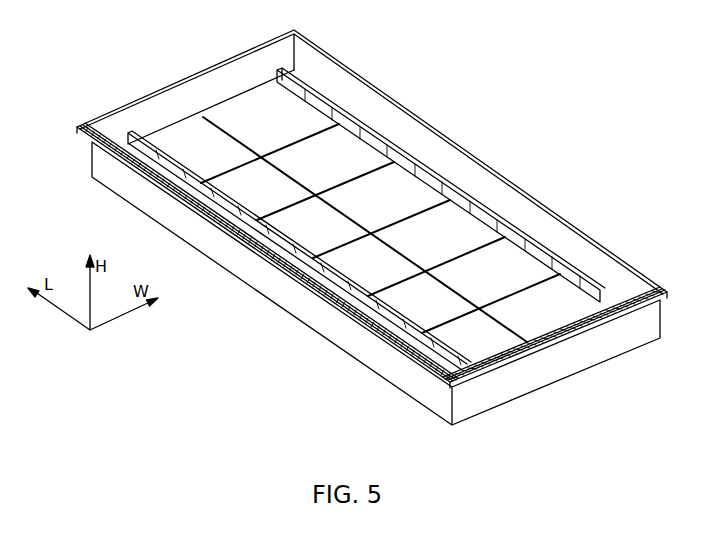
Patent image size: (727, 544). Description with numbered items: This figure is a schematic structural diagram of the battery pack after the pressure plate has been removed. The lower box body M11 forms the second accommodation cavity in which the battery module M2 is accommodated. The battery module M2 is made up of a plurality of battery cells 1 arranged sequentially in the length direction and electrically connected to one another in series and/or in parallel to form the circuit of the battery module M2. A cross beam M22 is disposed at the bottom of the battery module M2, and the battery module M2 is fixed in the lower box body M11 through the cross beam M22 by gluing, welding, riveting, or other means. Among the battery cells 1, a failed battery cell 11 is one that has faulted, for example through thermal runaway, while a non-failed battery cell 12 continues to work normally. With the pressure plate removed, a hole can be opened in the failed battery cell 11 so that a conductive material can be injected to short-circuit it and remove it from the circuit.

The battery cell 1 is at (553, 113).
The failed battery cell 11 is at (433, 232).
The non-failed battery cell 12 is at (443, 193).
The lower box body M11 is at (313, 50).
The battery module M2 is at (185, 121).
The cross beam M22 is at (600, 303).